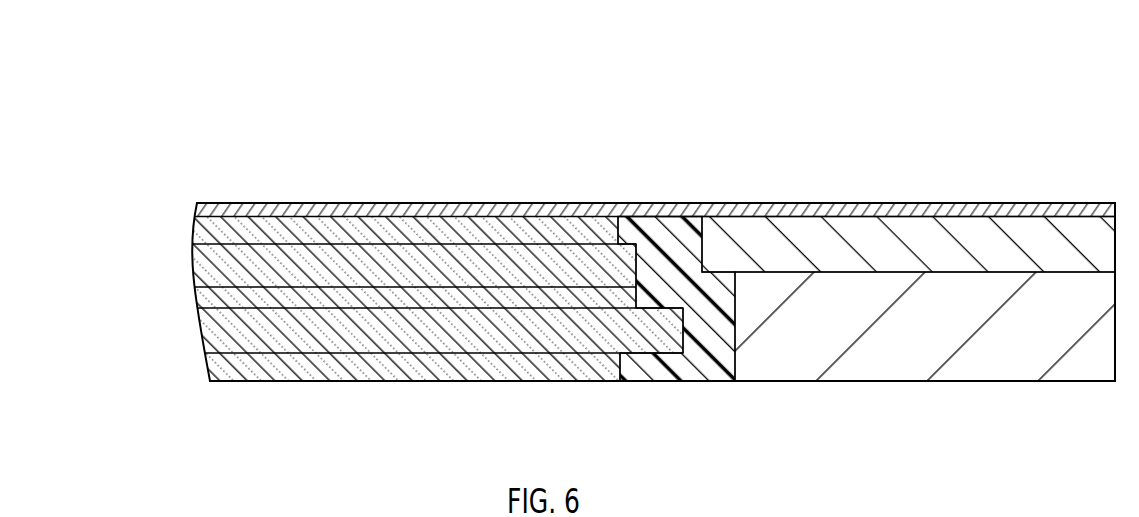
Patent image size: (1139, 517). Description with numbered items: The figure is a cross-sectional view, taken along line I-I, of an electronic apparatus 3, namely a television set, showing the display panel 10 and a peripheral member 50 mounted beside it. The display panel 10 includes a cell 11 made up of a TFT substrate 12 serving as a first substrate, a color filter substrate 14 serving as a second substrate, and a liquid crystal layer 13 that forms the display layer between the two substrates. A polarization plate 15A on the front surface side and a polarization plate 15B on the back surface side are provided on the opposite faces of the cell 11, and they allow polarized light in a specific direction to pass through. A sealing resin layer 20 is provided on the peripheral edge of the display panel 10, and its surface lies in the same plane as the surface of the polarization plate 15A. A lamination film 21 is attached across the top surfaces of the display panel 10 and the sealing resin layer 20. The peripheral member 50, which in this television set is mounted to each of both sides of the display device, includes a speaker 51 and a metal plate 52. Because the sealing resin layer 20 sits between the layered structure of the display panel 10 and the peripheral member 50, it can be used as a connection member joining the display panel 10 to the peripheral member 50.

The electronic apparatus 3 is at (1026, 76).
The display panel 10 is at (407, 401).
The cell 11 is at (96, 250).
The TFT substrate 12 is at (207, 335).
The liquid crystal layer 13 is at (199, 300).
The color filter substrate 14 is at (197, 268).
The polarization plate 15A is at (197, 233).
The polarization plate 15B is at (213, 368).
The sealing resin layer 20 is at (688, 373).
The lamination film 21 is at (240, 209).
The peripheral member 50 is at (913, 401).
The speaker 51 is at (807, 232).
The metal plate 52 is at (962, 295).